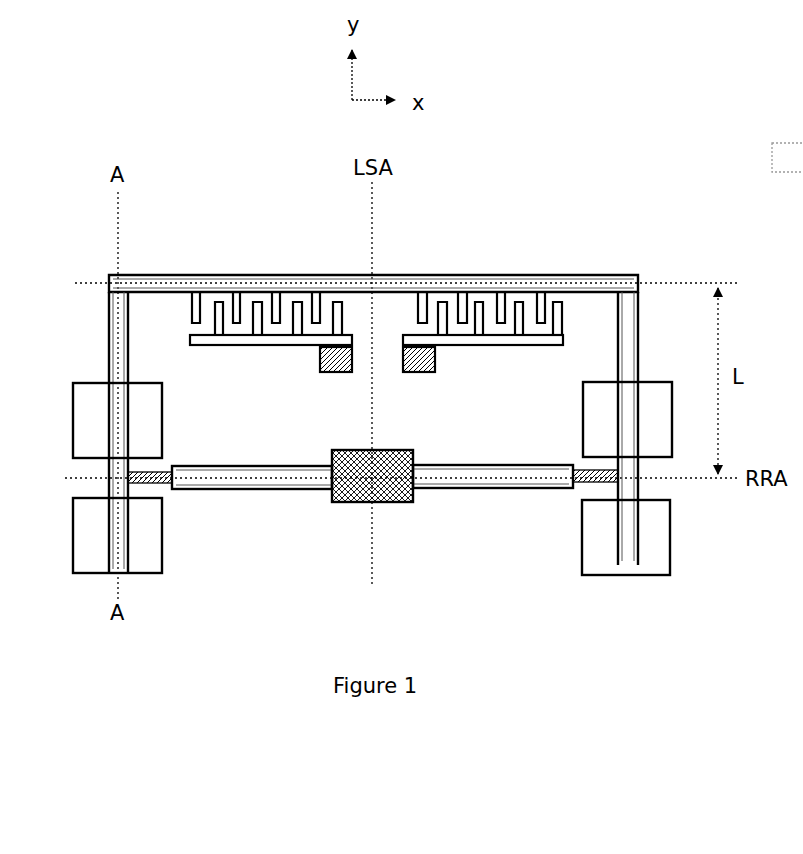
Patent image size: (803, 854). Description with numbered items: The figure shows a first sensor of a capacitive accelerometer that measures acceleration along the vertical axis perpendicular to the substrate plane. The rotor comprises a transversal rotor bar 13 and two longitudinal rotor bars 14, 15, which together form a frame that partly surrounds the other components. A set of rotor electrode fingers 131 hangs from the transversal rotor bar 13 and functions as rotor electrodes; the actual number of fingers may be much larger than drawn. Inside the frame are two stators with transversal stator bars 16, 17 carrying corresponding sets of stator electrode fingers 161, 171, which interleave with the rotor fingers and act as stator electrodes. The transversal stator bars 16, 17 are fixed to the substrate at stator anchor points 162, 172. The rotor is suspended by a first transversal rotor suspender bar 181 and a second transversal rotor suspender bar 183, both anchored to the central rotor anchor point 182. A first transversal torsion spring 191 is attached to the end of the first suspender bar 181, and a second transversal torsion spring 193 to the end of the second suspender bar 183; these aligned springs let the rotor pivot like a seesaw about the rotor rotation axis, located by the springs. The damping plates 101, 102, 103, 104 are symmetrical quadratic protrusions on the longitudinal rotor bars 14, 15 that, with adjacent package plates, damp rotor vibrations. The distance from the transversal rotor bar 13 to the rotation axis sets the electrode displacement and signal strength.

The transversal rotor bar 13 is at (592, 288).
The longitudinal rotor bar 14 is at (116, 318).
The longitudinal rotor bar 15 is at (630, 356).
The transversal stator bar 16 is at (472, 338).
The transversal stator bar 17 is at (245, 333).
The rotor electrode fingers 131 is at (196, 308).
The stator electrode fingers 161 is at (559, 318).
The stator anchor point 162 is at (423, 358).
The stator electrode fingers 171 is at (338, 320).
The stator anchor point 172 is at (332, 358).
The first transversal rotor suspender bar 181 is at (490, 474).
The rotor anchor point 182 is at (358, 476).
The second transversal rotor suspender bar 183 is at (262, 476).
The first transversal torsion spring 191 is at (590, 475).
The second transversal torsion spring 193 is at (157, 476).
The damping plate 101 is at (100, 412).
The damping plate 102 is at (90, 536).
The damping plate 103 is at (633, 426).
The damping plate 104 is at (633, 552).